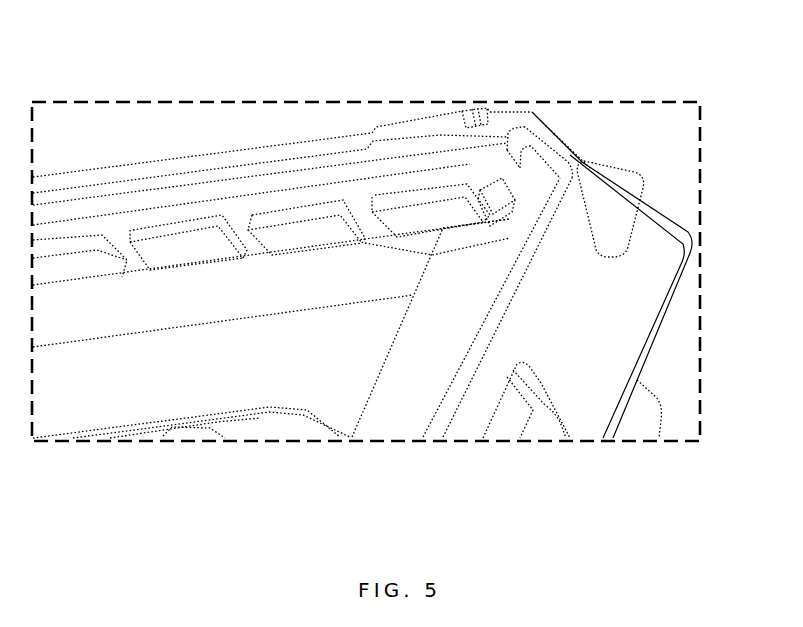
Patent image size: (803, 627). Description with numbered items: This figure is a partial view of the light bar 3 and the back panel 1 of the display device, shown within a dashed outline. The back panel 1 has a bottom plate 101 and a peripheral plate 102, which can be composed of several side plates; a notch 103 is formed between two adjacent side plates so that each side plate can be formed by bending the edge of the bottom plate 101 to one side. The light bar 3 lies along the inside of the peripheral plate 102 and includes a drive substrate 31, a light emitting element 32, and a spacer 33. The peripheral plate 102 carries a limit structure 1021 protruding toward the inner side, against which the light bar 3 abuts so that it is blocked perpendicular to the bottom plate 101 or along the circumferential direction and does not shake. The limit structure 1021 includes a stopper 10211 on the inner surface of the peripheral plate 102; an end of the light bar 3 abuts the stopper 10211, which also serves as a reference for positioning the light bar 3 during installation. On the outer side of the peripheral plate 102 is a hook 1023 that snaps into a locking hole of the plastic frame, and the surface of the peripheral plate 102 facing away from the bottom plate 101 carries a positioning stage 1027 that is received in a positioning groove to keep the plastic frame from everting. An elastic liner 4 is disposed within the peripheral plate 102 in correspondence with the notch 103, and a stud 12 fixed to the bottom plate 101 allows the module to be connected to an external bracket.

The back panel 1 is at (254, 499).
The bottom plate 101 is at (168, 397).
The peripheral plate 102 is at (447, 413).
The limit structure 1021 is at (665, 159).
The stopper 10211 is at (540, 147).
The hook 1023 is at (533, 430).
The positioning stage 1027 is at (462, 123).
The notch 103 is at (627, 182).
The stud 12 is at (655, 428).
The light bar 3 is at (368, 67).
The drive substrate 31 is at (215, 195).
The light emitting element 32 is at (413, 198).
The spacer 33 is at (490, 190).
The elastic liner 4 is at (458, 290).